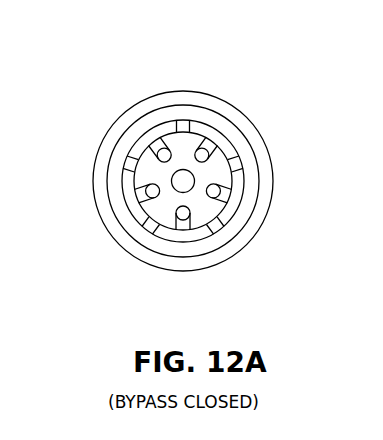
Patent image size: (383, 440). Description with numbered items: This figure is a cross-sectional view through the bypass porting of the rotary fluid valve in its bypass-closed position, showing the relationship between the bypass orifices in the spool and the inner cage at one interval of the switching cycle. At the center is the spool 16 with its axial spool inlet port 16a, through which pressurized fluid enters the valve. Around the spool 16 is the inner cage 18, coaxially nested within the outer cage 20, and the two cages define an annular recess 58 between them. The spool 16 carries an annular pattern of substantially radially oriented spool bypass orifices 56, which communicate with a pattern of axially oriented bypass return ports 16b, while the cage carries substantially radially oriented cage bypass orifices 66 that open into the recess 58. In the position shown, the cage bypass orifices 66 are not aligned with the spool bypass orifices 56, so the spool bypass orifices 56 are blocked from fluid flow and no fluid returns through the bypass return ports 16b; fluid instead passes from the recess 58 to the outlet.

The spool 16 is at (246, 225).
The axial spool inlet port 16a is at (184, 172).
The bypass return ports 16b is at (212, 124).
The inner cage 18 is at (198, 150).
The outer cage 20 is at (262, 224).
The spool bypass orifices 56 is at (156, 142).
The annular recess 58 is at (113, 177).
The cage bypass orifices 66 is at (112, 157).